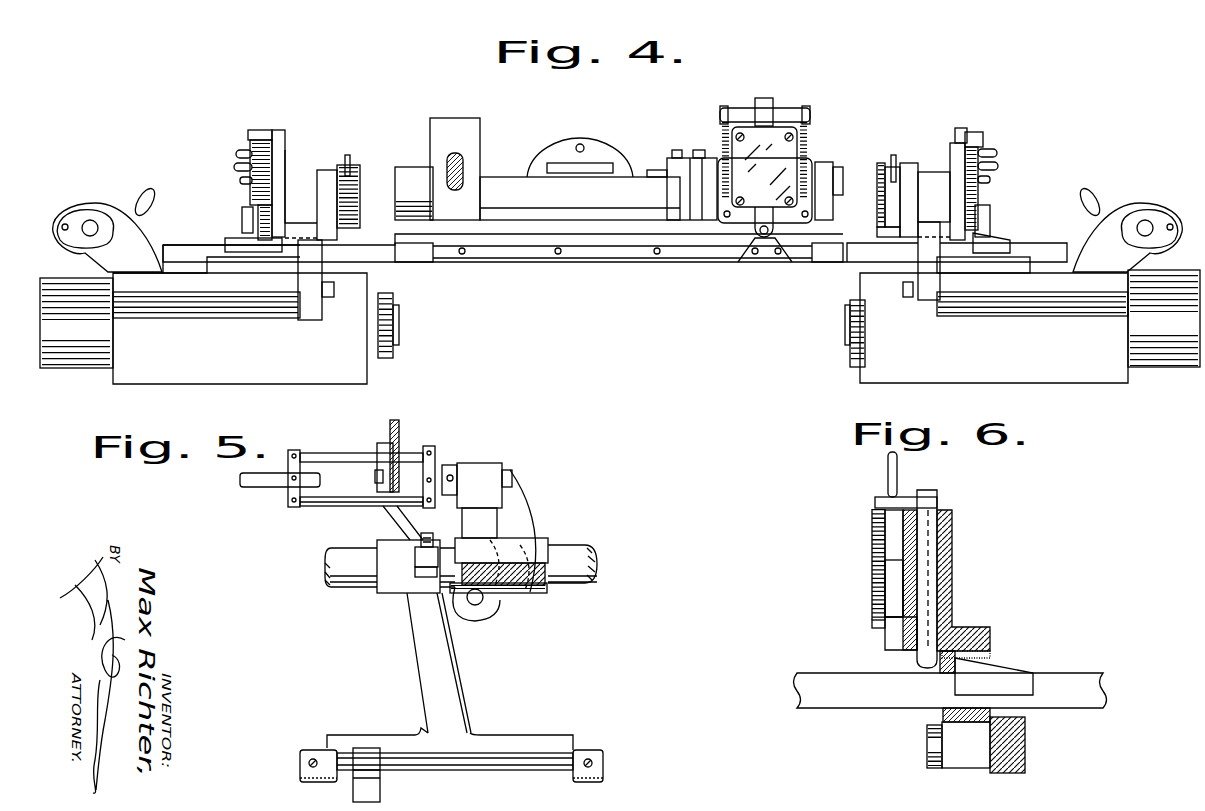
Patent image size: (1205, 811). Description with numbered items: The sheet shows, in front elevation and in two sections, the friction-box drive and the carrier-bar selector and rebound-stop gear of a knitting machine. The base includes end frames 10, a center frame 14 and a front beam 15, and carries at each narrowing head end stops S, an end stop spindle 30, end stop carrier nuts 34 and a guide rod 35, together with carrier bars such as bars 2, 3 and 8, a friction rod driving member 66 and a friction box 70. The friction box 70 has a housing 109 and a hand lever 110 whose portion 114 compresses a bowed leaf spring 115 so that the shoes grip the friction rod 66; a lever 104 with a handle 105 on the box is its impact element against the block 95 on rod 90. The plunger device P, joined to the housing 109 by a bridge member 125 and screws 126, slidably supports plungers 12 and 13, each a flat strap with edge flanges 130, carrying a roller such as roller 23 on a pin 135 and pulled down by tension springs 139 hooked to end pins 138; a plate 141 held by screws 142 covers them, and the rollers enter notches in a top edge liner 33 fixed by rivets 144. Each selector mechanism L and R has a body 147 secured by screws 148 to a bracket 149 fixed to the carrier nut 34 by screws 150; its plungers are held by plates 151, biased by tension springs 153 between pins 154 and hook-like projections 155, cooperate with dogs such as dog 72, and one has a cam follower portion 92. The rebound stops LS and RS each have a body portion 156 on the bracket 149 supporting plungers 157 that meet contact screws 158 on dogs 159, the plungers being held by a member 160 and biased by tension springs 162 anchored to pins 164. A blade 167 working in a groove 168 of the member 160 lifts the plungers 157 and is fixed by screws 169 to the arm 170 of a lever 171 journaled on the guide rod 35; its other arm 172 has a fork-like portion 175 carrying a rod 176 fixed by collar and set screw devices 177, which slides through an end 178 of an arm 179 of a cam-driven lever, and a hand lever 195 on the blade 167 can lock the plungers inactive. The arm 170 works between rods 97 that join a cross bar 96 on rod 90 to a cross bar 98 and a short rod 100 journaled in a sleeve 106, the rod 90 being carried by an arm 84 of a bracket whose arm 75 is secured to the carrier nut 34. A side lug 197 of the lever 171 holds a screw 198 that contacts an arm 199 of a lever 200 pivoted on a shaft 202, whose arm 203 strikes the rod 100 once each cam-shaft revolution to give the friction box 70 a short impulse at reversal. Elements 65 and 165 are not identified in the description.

In FIG. 4, the carrier bar 2 is at (394, 262).
In FIG. 4, the carrier bar 3 is at (485, 262).
In FIG. 6, the carrier bar 3 is at (855, 700).
In FIG. 4, the carrier bar 8 is at (428, 262).
In FIG. 4, the end frames 10 is at (263, 357).
In FIG. 4, the plunger 12 is at (808, 106).
In FIG. 4, the plunger 13 is at (776, 110).
In FIG. 5, the center frame 14 is at (542, 543).
In FIG. 4, the front beam 15 is at (727, 50).
In FIG. 4, the roller 23 is at (771, 252).
In FIG. 4, the end stop spindle 30 is at (393, 332).
In FIG. 4, the top edge liner 33 is at (540, 256).
In FIG. 4, the end stop carrier nut 34 is at (262, 370).
In FIG. 6, the end stop carrier nut 34 is at (1025, 745).
In FIG. 5, the guide rod 35 is at (582, 547).
In FIG. 4, the support 65 is at (988, 250).
In FIG. 4, the friction rod driving member 66 is at (396, 186).
In FIG. 4, the friction box 70 is at (508, 112).
In FIG. 4, the dog 72 is at (232, 244).
In FIG. 5, the arm 75 is at (546, 591).
In FIG. 5, the arm 84 is at (497, 508).
In FIG. 5, the rod 90 is at (250, 488).
In FIG. 4, the cam follower portion 92 is at (244, 228).
In FIG. 4, the block 95 is at (248, 241).
In FIG. 5, the cross bar 96 is at (294, 450).
In FIG. 5, the rods 97 is at (360, 454).
In FIG. 5, the cross bar 98 is at (432, 450).
In FIG. 5, the short rod 100 is at (511, 472).
In FIG. 4, the lever 104 is at (460, 135).
In FIG. 4, the handle 105 is at (452, 160).
In FIG. 5, the sleeve 106 is at (476, 470).
In FIG. 4, the housing 109 is at (490, 172).
In FIG. 4, the hand lever 110 is at (597, 140).
In FIG. 4, the portion 114 is at (580, 163).
In FIG. 4, the bowed leaf spring 115 is at (602, 165).
In FIG. 4, the bridge member 125 is at (668, 166).
In FIG. 4, the screws 126 is at (703, 158).
In FIG. 4, the edge flanges 130 is at (322, 293).
In FIG. 4, the pins 135 is at (756, 238).
In FIG. 4, the end pins 138 is at (806, 128).
In FIG. 4, the tension springs 139 is at (724, 135).
In FIG. 4, the plate 141 is at (805, 150).
In FIG. 4, the screws 142 is at (786, 142).
In FIG. 4, the rivets 144 is at (650, 258).
In FIG. 4, the body 147 is at (280, 145).
In FIG. 4, the screws 148 is at (990, 222).
In FIG. 4, the bracket 149 is at (307, 292).
In FIG. 6, the bracket 149 is at (960, 755).
In FIG. 4, the screws 150 is at (905, 292).
In FIG. 6, the screws 150 is at (928, 748).
In FIG. 4, the plates 151 is at (258, 212).
In FIG. 4, the tension springs 153 is at (238, 155).
In FIG. 4, the pins 154 is at (248, 135).
In FIG. 6, the pins 154 is at (938, 495).
In FIG. 4, the hook-like projections 155 is at (236, 168).
In FIG. 4, the body portion 156 is at (320, 182).
In FIG. 6, the body portion 156 is at (943, 608).
In FIG. 4, the plungers 157 is at (955, 150).
In FIG. 6, the contact screws 158 is at (940, 667).
In FIG. 4, the dogs 159 is at (290, 246).
In FIG. 6, the dogs 159 is at (1000, 675).
In FIG. 4, the member 160 is at (350, 210).
In FIG. 6, the member 160 is at (878, 597).
In FIG. 4, the tension springs 162 is at (345, 194).
In FIG. 6, the tension springs 162 is at (878, 540).
In FIG. 6, the pins 164 is at (878, 625).
In FIG. 6, the housing 165 is at (904, 497).
In FIG. 4, the blade 167 is at (352, 160).
In FIG. 5, the blade 167 is at (399, 425).
In FIG. 6, the blade 167 is at (906, 500).
In FIG. 6, the groove 168 is at (878, 515).
In FIG. 5, the screws 169 is at (375, 477).
In FIG. 5, the arm 170 is at (395, 517).
In FIG. 5, the lever 171 is at (385, 592).
In FIG. 5, the arm 172 is at (417, 641).
In FIG. 5, the fork-like portion 175 is at (382, 735).
In FIG. 5, the rod 176 is at (497, 770).
In FIG. 5, the collar and set screw devices 177 is at (310, 755).
In FIG. 5, the end 178 is at (365, 755).
In FIG. 5, the arm 179 is at (374, 793).
In FIG. 6, the hand lever 195 is at (888, 465).
In FIG. 5, the side lug 197 is at (415, 554).
In FIG. 5, the screw 198 is at (428, 533).
In FIG. 5, the arm 199 is at (445, 638).
In FIG. 5, the lever 200 is at (485, 600).
In FIG. 5, the shaft 202 is at (484, 612).
In FIG. 5, the arm 203 is at (503, 514).
In FIG. 4, the end stops S is at (140, 192).
In FIG. 4, the selector mechanism L is at (280, 120).
In FIG. 4, the rebound stop LS is at (360, 148).
In FIG. 4, the plunger device P is at (802, 92).
In FIG. 4, the selector mechanism R is at (998, 112).
In FIG. 4, the rebound stop RS is at (920, 143).
In FIG. 6, the rebound stop RS is at (1040, 600).